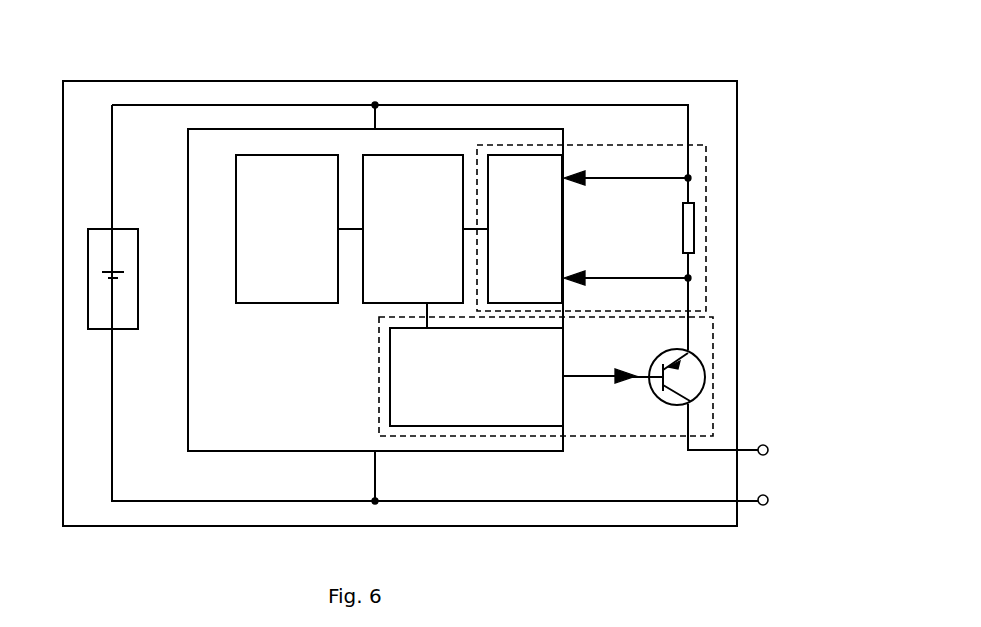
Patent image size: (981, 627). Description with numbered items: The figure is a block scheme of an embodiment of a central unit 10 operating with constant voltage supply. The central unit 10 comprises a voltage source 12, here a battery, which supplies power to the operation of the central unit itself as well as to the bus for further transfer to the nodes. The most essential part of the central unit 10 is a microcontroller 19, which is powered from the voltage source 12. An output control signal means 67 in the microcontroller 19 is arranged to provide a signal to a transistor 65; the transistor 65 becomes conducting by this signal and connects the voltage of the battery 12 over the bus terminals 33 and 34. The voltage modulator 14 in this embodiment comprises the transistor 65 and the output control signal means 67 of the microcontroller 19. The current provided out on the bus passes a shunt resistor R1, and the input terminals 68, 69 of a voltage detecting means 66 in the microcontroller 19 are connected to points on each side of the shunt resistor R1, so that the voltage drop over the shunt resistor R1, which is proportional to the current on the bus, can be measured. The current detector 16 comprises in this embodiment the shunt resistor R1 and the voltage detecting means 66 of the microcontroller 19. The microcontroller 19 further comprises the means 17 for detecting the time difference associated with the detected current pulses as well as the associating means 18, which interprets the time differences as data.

The central unit 10 is at (718, 92).
The voltage source 12 is at (100, 260).
The voltage modulator 14 is at (620, 437).
The current detector 16 is at (585, 158).
The means for detecting the time difference 17 is at (370, 297).
The associating means 18 is at (268, 300).
The microcontroller 19 is at (193, 392).
The bus terminal 33 is at (767, 445).
The bus terminal 34 is at (768, 505).
The transistor 65 is at (693, 375).
The voltage detecting means 66 is at (546, 250).
The output control signal means 67 is at (390, 392).
The input terminal 68 is at (627, 178).
The input terminal 69 is at (622, 278).
The shunt resistor R1 is at (698, 222).